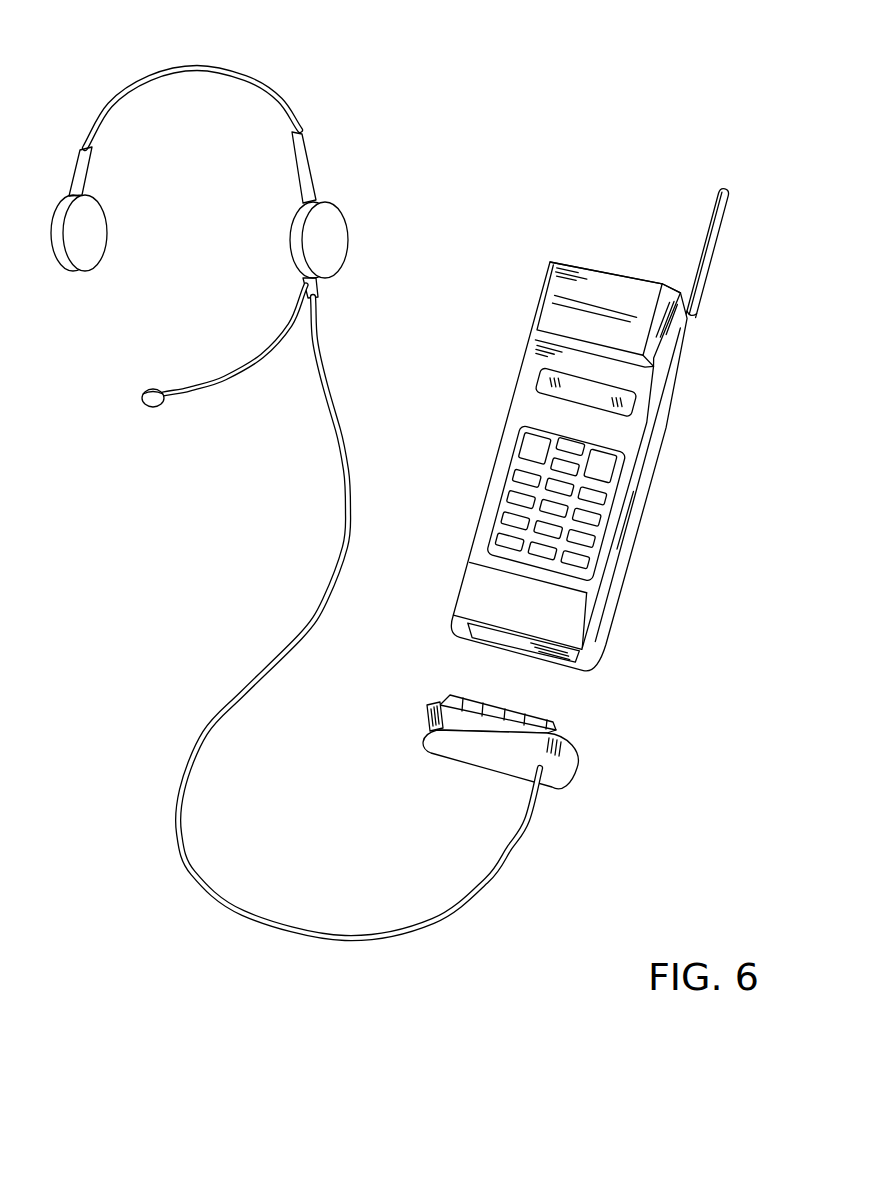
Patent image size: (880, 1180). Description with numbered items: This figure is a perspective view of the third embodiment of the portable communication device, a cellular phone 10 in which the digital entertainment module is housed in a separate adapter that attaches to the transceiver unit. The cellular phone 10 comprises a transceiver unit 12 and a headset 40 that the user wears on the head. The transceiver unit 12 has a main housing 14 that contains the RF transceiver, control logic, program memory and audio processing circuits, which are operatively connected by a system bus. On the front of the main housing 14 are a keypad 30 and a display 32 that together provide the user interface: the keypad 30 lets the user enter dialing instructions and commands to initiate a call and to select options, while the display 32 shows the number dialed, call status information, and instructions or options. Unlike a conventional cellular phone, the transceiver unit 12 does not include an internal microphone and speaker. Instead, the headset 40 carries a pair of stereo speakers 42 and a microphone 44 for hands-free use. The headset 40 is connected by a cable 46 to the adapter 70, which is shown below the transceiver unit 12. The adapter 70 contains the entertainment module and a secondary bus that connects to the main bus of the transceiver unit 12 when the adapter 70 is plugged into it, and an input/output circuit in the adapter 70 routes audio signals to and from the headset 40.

The cellular phone 10 is at (647, 118).
The transceiver unit 12 is at (744, 445).
The main housing 14 is at (593, 265).
The keypad 30 is at (600, 508).
The display 32 is at (634, 403).
The headset 40 is at (303, 85).
The stereo speakers 42 is at (332, 230).
The microphone 44 is at (153, 406).
The cable 46 is at (207, 728).
The adapter 70 is at (584, 757).